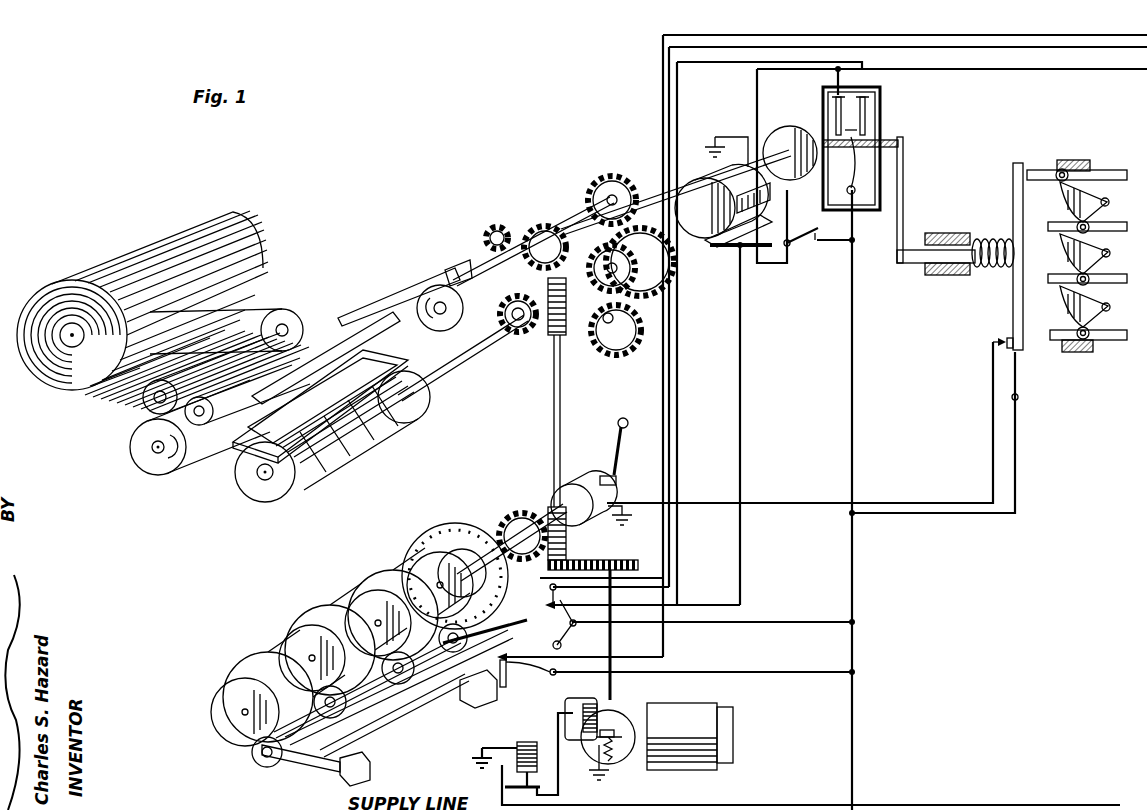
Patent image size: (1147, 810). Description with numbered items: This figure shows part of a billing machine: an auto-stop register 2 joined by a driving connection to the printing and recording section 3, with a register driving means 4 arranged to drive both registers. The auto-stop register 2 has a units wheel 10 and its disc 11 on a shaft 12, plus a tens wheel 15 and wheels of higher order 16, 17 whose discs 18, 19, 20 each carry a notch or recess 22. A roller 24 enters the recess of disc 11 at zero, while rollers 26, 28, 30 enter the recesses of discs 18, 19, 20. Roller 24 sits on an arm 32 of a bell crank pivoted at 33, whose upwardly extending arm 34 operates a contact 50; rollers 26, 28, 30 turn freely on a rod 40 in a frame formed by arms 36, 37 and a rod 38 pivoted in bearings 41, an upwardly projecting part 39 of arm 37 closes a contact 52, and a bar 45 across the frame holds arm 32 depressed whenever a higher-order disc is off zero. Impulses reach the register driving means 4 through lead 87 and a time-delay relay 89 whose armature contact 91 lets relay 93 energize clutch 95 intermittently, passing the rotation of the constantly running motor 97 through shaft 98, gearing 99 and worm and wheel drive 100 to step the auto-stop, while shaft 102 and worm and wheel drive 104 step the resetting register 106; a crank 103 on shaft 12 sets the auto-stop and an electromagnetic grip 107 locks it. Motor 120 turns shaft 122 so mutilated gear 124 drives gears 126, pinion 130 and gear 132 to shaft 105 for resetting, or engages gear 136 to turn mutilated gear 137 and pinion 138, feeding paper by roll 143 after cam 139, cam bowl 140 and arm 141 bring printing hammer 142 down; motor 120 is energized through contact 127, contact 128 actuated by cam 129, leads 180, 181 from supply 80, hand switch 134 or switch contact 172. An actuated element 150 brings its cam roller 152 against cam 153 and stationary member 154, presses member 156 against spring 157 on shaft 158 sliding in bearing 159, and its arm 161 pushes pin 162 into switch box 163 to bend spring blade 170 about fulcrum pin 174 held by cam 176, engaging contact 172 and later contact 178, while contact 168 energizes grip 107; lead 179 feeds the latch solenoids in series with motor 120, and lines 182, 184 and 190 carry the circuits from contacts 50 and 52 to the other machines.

The auto-stop register 2 is at (283, 592).
The printing and recording section 3 is at (356, 268).
The register driving means 4 is at (750, 727).
The units wheel 10 is at (440, 540).
The disc 11 is at (440, 555).
The shaft 12 is at (544, 516).
The tens wheel 15 is at (372, 575).
The hundreds wheel 16 is at (318, 616).
The wheel of higher order 17 is at (236, 665).
The disc 18 is at (350, 600).
The disc 19 is at (285, 640).
The disc 20 is at (212, 699).
The notch or recess 22 is at (417, 563).
The roller 24 is at (455, 655).
The roller 26 is at (400, 684).
The roller 28 is at (333, 718).
The roller 30 is at (257, 762).
The arm 32 is at (520, 638).
The pivot 33 is at (562, 648).
The arm 34 is at (578, 622).
The arm 36 is at (300, 768).
The arm 37 is at (497, 700).
The rod 38 is at (378, 742).
The upwardly projecting part 39 is at (507, 676).
The rod 40 is at (390, 678).
The bearings 41 is at (350, 778).
The bar 45 is at (430, 710).
The contact 50 is at (546, 600).
The contact 52 is at (552, 676).
The supply line 80 is at (937, 803).
The lead 87 is at (775, 790).
The relay 89 is at (528, 742).
The armature actuated contact 91 is at (505, 787).
The relay 93 is at (586, 705).
The clutch 95 is at (620, 718).
The motor 97 is at (692, 710).
The shaft 98 is at (611, 640).
The gearing 99 is at (568, 562).
The worm and wheel drive 100 is at (520, 512).
The shaft 102 is at (552, 428).
The crank 103 is at (616, 446).
The worm and wheel drive 104 is at (520, 336).
The shaft 105 is at (448, 366).
The register 106 is at (413, 408).
The electromagnetic grip 107 is at (616, 483).
The motor 120 is at (735, 170).
The shaft 122 is at (780, 135).
The mutilated gear 124 is at (640, 295).
The gears 126 is at (612, 352).
The contact 127 is at (580, 598).
The contact 128 is at (746, 255).
The cam 129 is at (720, 250).
The pinion 130 is at (549, 345).
The gear 132 is at (600, 262).
The hand switch 134 is at (818, 247).
The gear 136 is at (618, 178).
The mutilated gear 137 is at (545, 225).
The pinion 138 is at (497, 226).
The cam 139 is at (436, 332).
The cam bowl 140 is at (456, 272).
The arm 141 is at (398, 298).
The printing hammer 142 is at (320, 330).
The roll 143 is at (153, 478).
The element 150 is at (1100, 170).
The cam roller 152 is at (1056, 170).
The cam 153 is at (1062, 196).
The stationary member 154 is at (1072, 160).
The vertically positioned member 156 is at (1012, 184).
The spring 157 is at (988, 240).
The shaft 158 is at (908, 242).
The bearing 159 is at (925, 277).
The arm 161 is at (904, 163).
The pin 162 is at (898, 143).
The switch box 163 is at (880, 123).
The contact 168 is at (1000, 345).
The switch blade 170 is at (858, 208).
The switch contact 172 is at (823, 101).
The pin 174 is at (846, 172).
The cam 176 is at (803, 175).
The contact 178 is at (882, 106).
The lead 179 is at (1040, 72).
The lead 180 is at (851, 344).
The lead 181 is at (742, 392).
The line 182 is at (676, 405).
The lead 184 is at (1046, 40).
The lead 190 is at (662, 102).